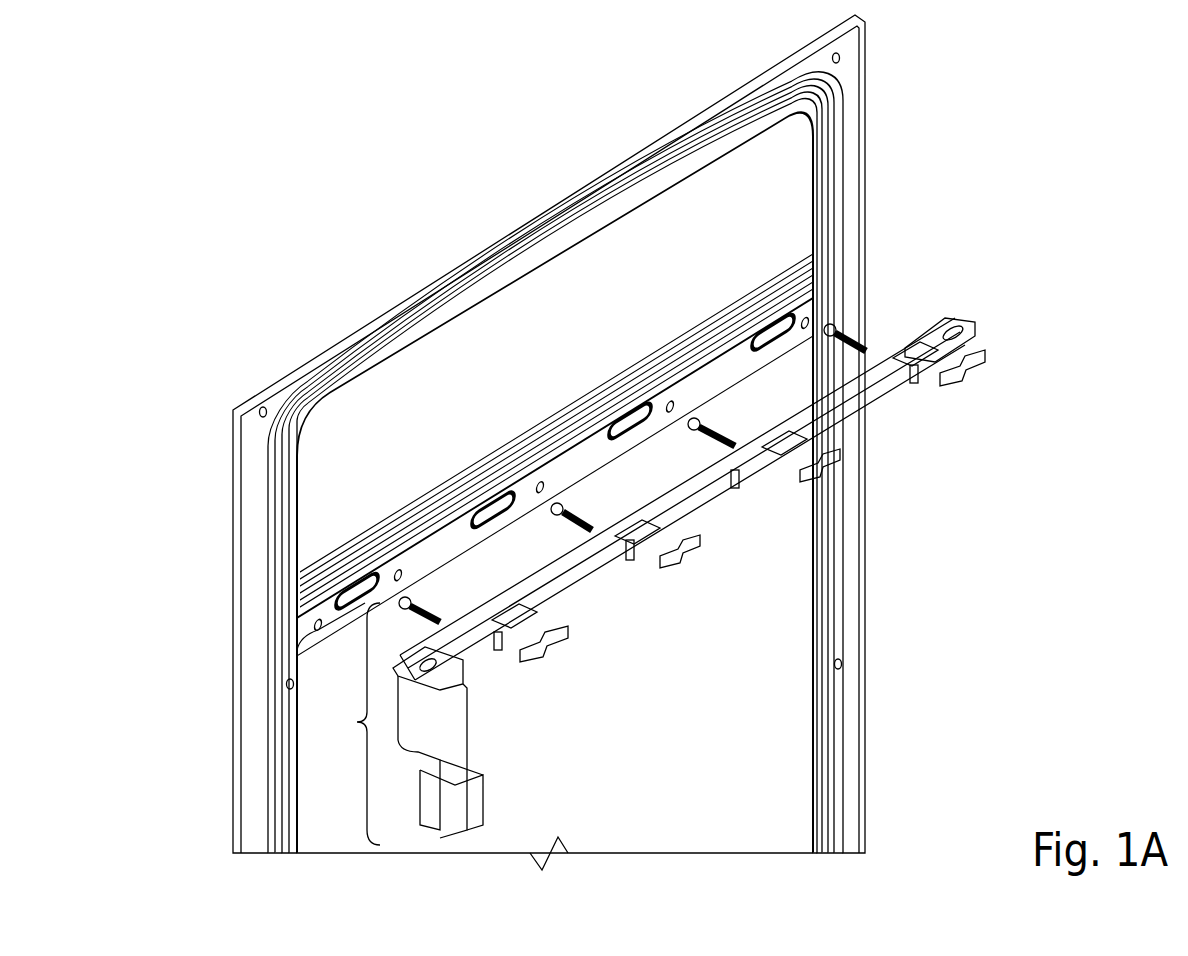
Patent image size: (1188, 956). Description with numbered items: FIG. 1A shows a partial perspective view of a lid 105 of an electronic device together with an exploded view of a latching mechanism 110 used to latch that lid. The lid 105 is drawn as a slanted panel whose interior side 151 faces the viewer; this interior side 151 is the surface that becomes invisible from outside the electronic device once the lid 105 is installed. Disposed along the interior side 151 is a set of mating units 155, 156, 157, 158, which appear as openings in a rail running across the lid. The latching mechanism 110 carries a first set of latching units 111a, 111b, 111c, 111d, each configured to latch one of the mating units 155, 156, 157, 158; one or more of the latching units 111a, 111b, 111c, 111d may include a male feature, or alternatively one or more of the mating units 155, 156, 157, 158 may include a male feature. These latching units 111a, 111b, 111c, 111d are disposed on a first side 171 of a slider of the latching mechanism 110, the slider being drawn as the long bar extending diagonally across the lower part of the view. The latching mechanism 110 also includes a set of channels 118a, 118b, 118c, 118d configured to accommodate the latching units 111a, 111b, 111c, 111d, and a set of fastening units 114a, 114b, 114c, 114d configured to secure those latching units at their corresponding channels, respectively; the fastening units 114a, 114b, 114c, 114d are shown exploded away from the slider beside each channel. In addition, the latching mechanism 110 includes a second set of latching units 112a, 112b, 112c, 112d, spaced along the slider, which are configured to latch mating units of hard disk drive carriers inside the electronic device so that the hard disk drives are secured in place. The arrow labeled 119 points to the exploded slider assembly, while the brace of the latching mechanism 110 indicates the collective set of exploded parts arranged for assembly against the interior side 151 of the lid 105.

The lid 105 is at (222, 623).
The latching mechanism 110 is at (357, 722).
The latching unit 111a is at (827, 324).
The latching unit 111b is at (687, 420).
The latching unit 111c is at (545, 508).
The latching unit 111d is at (404, 598).
The latching unit 112a is at (918, 372).
The latching unit 112b is at (739, 476).
The latching unit 112c is at (634, 548).
The latching unit 112d is at (498, 642).
The fastening unit 114a is at (980, 364).
The fastening unit 114b is at (842, 454).
The fastening unit 114c is at (698, 552).
The fastening unit 114d is at (566, 632).
The channel 118a is at (915, 353).
The channel 118b is at (784, 440).
The channel 118c is at (650, 520).
The channel 118d is at (515, 615).
The hinge assembly 119 is at (978, 314).
The interior side 151 is at (850, 178).
The mating unit 155 is at (768, 318).
The mating unit 156 is at (622, 400).
The mating unit 157 is at (488, 500).
The mating unit 158 is at (353, 582).
The first side 171 is at (910, 330).